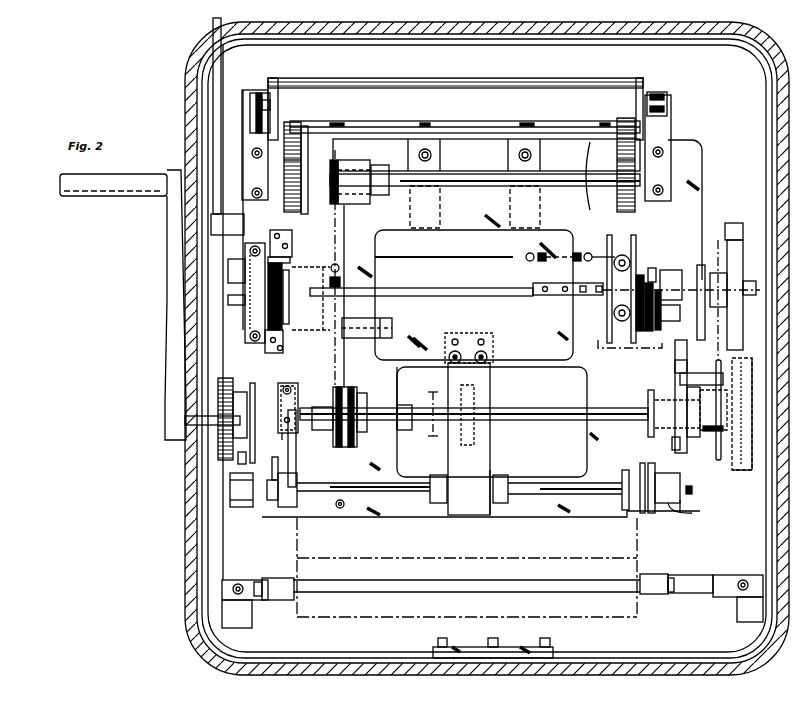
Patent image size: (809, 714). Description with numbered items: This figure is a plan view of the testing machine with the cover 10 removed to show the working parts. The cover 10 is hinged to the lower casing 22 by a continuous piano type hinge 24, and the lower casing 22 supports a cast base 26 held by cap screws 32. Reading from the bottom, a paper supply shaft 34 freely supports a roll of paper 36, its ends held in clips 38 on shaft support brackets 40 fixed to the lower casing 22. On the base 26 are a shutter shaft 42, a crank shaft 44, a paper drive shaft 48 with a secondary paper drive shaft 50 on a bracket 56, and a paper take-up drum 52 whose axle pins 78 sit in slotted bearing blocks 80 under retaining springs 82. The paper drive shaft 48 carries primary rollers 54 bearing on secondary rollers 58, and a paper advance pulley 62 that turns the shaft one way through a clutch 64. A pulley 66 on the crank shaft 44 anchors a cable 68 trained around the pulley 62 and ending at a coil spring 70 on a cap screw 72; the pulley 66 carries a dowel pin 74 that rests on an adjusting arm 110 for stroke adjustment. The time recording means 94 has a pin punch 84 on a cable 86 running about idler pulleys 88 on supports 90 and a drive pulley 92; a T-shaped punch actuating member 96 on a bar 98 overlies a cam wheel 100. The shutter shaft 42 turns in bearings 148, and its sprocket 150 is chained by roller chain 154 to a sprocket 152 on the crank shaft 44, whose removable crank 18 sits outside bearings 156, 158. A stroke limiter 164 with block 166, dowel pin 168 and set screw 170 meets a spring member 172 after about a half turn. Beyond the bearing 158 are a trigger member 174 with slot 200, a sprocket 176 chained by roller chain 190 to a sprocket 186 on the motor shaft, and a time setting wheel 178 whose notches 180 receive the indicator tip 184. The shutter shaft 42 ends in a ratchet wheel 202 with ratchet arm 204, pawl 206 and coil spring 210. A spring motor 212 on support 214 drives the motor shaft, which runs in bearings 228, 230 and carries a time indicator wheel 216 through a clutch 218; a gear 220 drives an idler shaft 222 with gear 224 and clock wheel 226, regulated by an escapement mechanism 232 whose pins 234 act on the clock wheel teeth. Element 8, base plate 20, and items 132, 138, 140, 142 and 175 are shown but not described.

The section line 8 is at (433, 414).
The cover 10 is at (782, 543).
The crank 18 is at (155, 176).
The base plate 20 is at (493, 648).
The lower casing 22 is at (778, 557).
The piano type hinge 24 is at (316, 40).
The base 26 is at (683, 142).
The cap screws 32 is at (319, 618).
The paper supply shaft 34 is at (306, 592).
The roll of paper 36 is at (388, 131).
The clips 38 is at (278, 581).
The shaft support brackets 40 is at (228, 578).
The shutter shaft 42 is at (600, 488).
The crank shaft 44 is at (510, 293).
The paper drive shaft 48 is at (492, 178).
The secondary paper drive shaft 50 is at (575, 133).
The paper take-up drum 52 is at (524, 85).
The primary rollers 54 is at (300, 204).
The bracket 56 is at (296, 126).
The secondary rollers 58 is at (628, 118).
The paper advance pulley 62 is at (352, 204).
The clutch 64 is at (378, 169).
The pulley 66 is at (608, 259).
The cable 68 is at (345, 226).
The coil spring 70 is at (340, 386).
The cap screw 72 is at (326, 406).
The dowel pin 74 is at (362, 400).
The axle pins 78 is at (256, 107).
The bearing blocks 80 is at (254, 93).
The retaining springs 82 is at (260, 93).
The pin punch 84 is at (366, 330).
The cable 86 is at (384, 258).
The idler pulleys 88 is at (614, 312).
The supports 90 is at (288, 244).
The drive pulley 92 is at (286, 303).
The time recording means 94 is at (381, 330).
The punch actuating member 96 is at (520, 319).
The bar 98 is at (490, 466).
The cam wheel 100 is at (475, 385).
The adjusting arm 110 is at (392, 375).
The bracket 132 is at (275, 457).
The disc 138 is at (650, 468).
The base bracket 140 is at (276, 513).
The rod 142 is at (221, 172).
The bearings 148 is at (627, 512).
The sprocket 150 is at (236, 479).
The sprocket 152 is at (240, 394).
The roller chain 154 is at (240, 466).
The bearing 156 is at (256, 398).
The bearing 158 is at (656, 411).
The stroke limiter 164 is at (296, 386).
The block 166 is at (290, 434).
The dowel pin 168 is at (289, 421).
The set screw 170 is at (287, 387).
The spring member 172 is at (291, 455).
The trigger member 174 is at (675, 370).
The stop 175 is at (672, 440).
The sprocket 176 is at (716, 446).
The time setting wheel 178 is at (740, 471).
The notches 180 is at (745, 364).
The upper tip 184 is at (745, 404).
The sprocket 186 is at (705, 276).
The roller chain 190 is at (718, 318).
The slot 200 is at (676, 358).
The ratchet wheel 202 is at (681, 514).
The ratchet arm 204 is at (690, 512).
The ratchet pawl 206 is at (676, 470).
The coil spring 210 is at (692, 488).
The spring motor 212 is at (258, 327).
The support 214 is at (250, 300).
The time indicator wheel 216 is at (743, 243).
The clutch 218 is at (675, 270).
The gear 220 is at (652, 268).
The idler shaft 222 is at (676, 320).
The gear 224 is at (659, 320).
The clock wheel 226 is at (649, 331).
The bearing 228 is at (311, 273).
The bearing 230 is at (618, 302).
The escapement mechanism 232 is at (640, 330).
The pins 234 is at (734, 223).